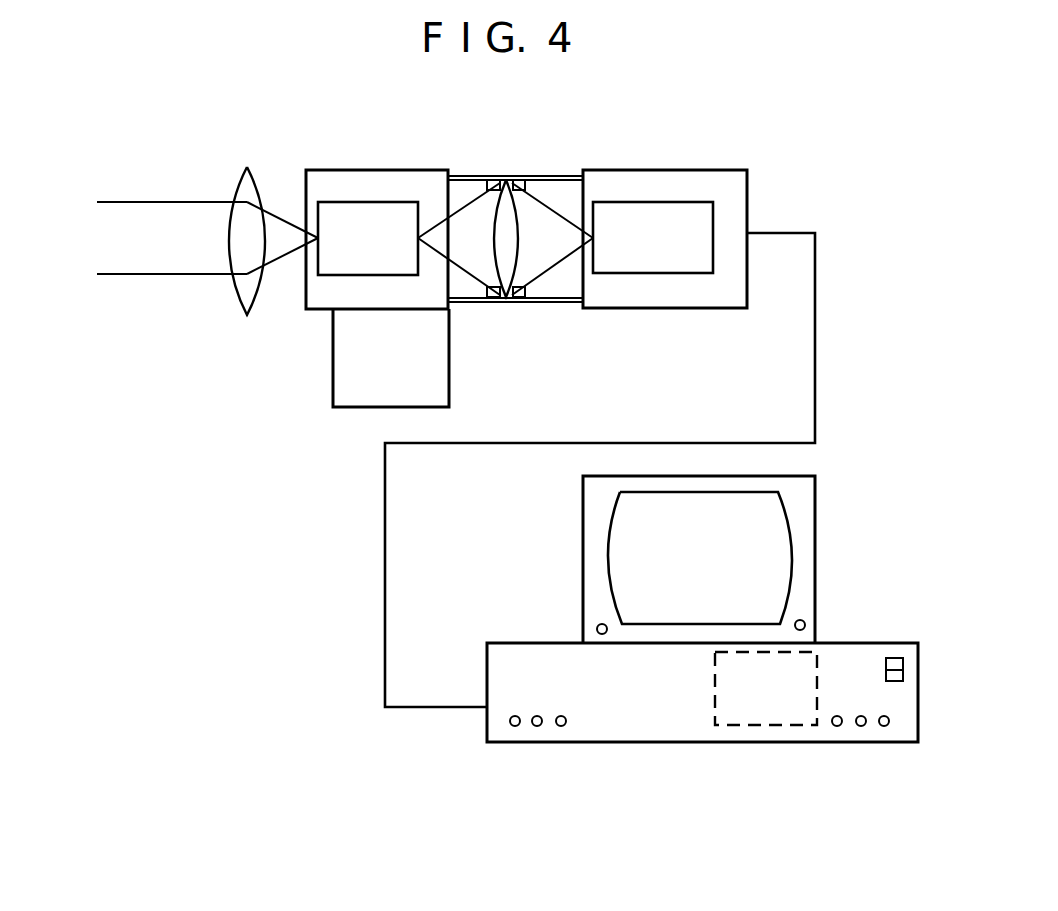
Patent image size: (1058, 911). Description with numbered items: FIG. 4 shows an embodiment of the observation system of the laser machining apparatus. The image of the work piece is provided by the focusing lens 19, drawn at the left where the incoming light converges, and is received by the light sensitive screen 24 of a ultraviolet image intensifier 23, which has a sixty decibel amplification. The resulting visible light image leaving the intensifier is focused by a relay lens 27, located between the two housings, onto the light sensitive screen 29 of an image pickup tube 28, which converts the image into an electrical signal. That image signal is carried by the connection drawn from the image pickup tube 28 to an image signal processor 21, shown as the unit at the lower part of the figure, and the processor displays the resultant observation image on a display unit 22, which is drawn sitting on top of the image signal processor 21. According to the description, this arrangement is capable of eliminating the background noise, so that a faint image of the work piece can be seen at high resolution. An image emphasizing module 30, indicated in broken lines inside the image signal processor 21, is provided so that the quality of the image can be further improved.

The focusing lens 19 is at (240, 180).
The image signal processor 21 is at (652, 730).
The display unit 22 is at (803, 512).
The ultraviolet image intensifier 23 is at (390, 183).
The light sensitive screen 24 is at (320, 227).
The relay lens 27 is at (517, 227).
The image pickup tube 28 is at (710, 185).
The light sensitive screen 29 is at (596, 223).
The image emphasizing module 30 is at (773, 725).